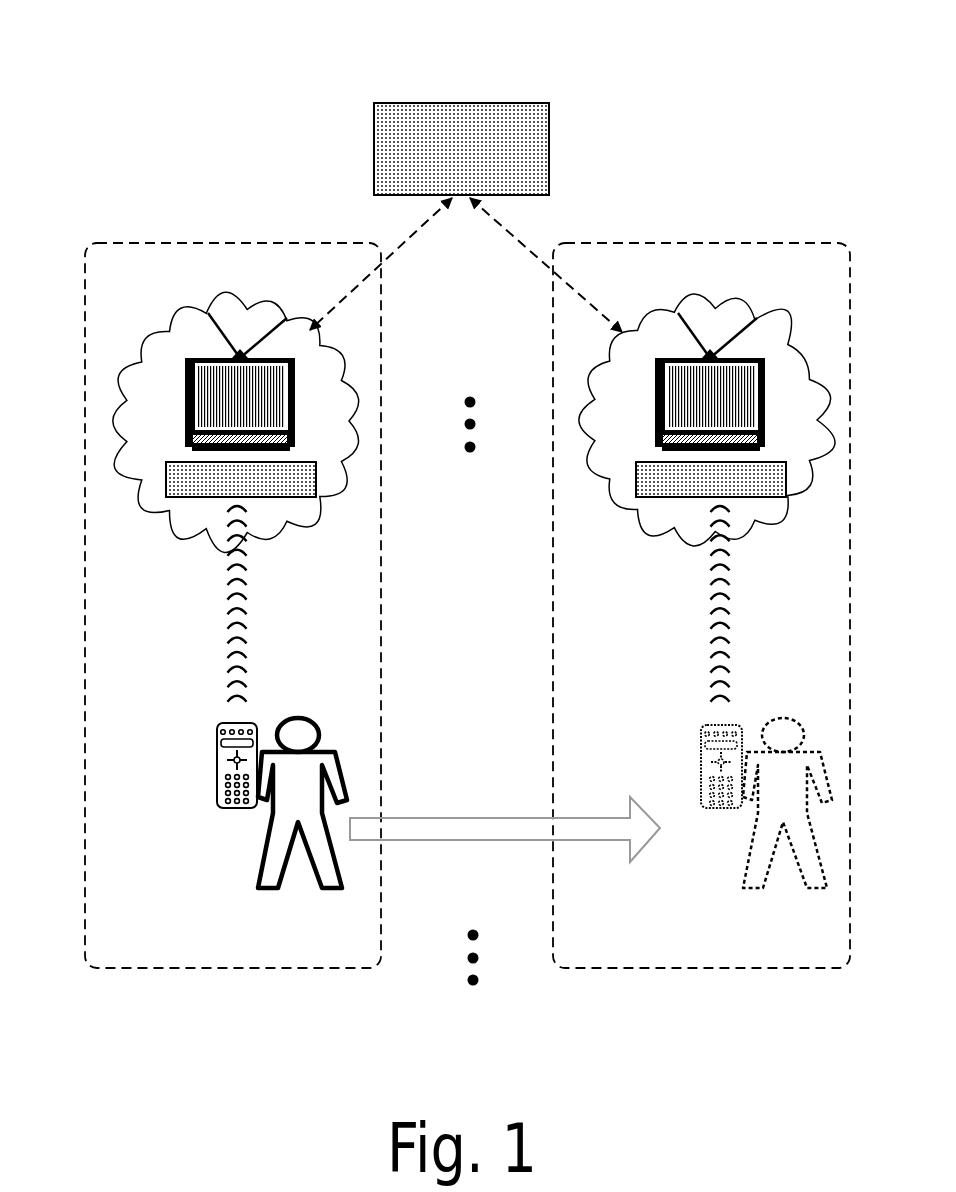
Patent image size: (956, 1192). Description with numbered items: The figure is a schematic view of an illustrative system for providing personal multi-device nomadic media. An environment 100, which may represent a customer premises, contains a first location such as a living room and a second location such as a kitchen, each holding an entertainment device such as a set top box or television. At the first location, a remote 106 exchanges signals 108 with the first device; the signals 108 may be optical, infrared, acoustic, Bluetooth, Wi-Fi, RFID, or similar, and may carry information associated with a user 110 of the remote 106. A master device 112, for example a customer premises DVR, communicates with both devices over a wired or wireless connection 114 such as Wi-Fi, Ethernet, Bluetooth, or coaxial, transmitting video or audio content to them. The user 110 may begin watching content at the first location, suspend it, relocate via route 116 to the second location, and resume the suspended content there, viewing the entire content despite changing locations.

The environment 100 is at (135, 46).
The remote 106 is at (701, 728).
The signals 108 is at (651, 611).
The user 110 is at (748, 855).
The master device 112 is at (405, 103).
The wired or wireless connection 114 is at (512, 240).
The route 116 is at (408, 817).